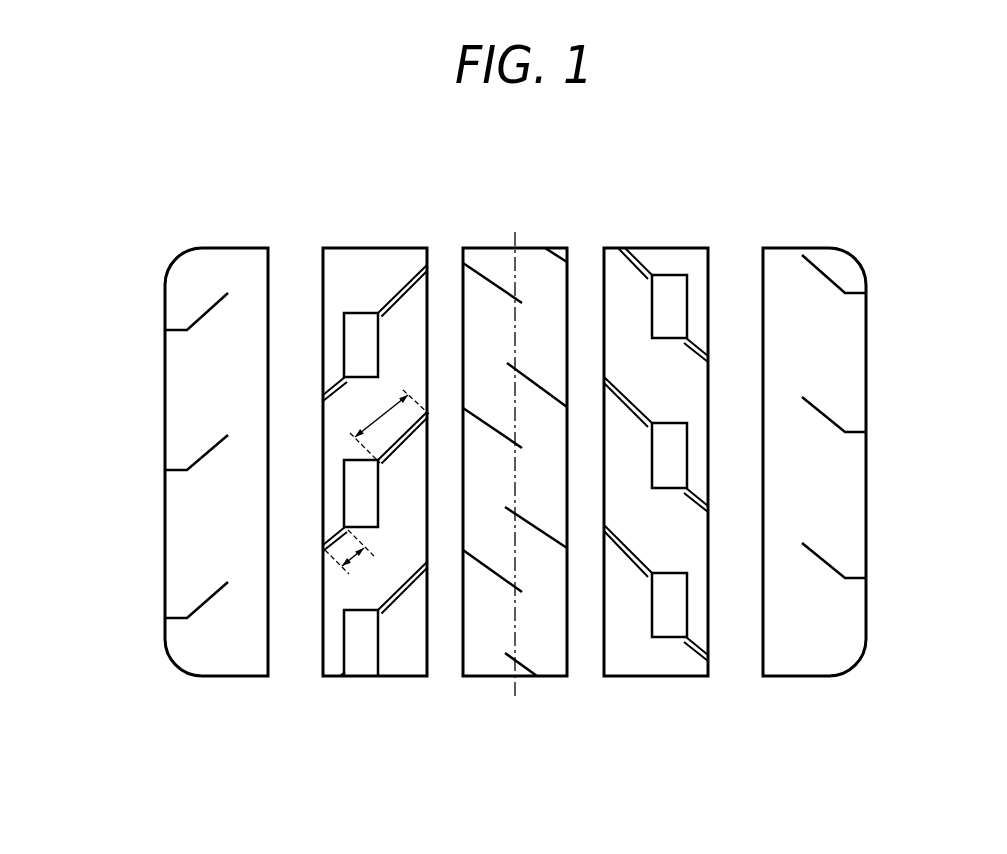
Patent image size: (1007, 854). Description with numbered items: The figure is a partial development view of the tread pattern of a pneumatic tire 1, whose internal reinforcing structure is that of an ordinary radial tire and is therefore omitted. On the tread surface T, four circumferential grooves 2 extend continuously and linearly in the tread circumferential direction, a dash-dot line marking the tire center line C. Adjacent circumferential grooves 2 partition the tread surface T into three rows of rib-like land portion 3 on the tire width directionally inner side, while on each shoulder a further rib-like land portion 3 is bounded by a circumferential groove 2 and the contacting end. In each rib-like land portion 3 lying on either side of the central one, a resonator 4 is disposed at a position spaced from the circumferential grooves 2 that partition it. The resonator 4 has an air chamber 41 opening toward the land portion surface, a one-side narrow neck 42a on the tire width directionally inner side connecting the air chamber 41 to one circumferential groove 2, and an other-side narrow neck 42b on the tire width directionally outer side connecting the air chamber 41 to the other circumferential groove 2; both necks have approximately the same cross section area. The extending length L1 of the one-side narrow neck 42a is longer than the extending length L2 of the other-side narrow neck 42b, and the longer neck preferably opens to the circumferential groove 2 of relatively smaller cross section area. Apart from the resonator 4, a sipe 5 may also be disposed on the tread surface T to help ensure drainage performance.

The pneumatic tire 1 is at (856, 191).
The tread surface T is at (874, 262).
The circumferential groove 2 is at (285, 688).
The rib-like land portion 3 is at (792, 240).
The resonator 4 is at (253, 158).
The air chamber 41 is at (352, 313).
The one-side narrow neck 42a is at (397, 292).
The other-side narrow neck 42b is at (333, 378).
The sipe 5 is at (205, 313).
The tire equator C is at (517, 450).
The extending length of the one-side narrow neck L1 is at (389, 426).
The extending length of the other-side narrow neck L2 is at (356, 559).